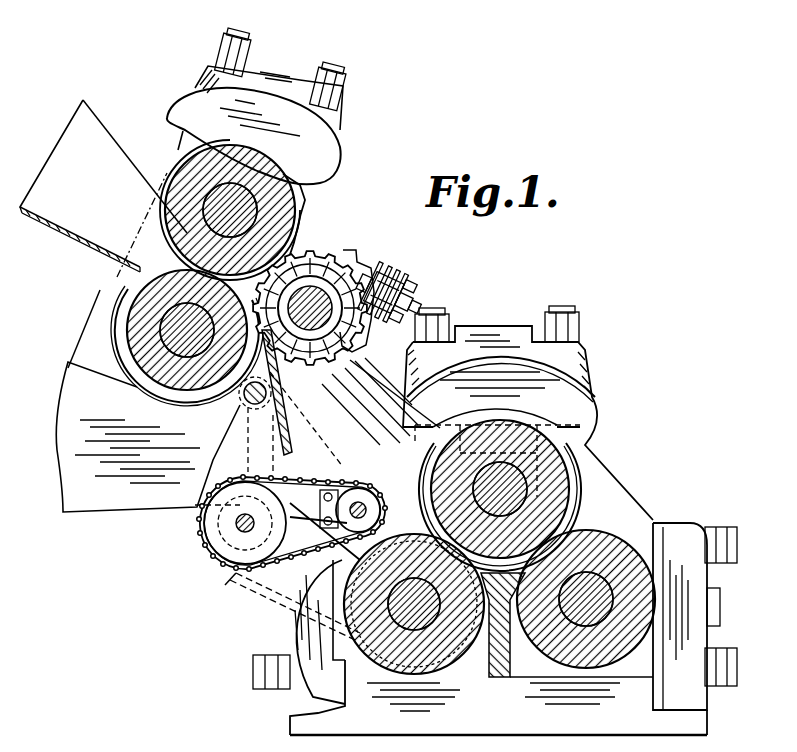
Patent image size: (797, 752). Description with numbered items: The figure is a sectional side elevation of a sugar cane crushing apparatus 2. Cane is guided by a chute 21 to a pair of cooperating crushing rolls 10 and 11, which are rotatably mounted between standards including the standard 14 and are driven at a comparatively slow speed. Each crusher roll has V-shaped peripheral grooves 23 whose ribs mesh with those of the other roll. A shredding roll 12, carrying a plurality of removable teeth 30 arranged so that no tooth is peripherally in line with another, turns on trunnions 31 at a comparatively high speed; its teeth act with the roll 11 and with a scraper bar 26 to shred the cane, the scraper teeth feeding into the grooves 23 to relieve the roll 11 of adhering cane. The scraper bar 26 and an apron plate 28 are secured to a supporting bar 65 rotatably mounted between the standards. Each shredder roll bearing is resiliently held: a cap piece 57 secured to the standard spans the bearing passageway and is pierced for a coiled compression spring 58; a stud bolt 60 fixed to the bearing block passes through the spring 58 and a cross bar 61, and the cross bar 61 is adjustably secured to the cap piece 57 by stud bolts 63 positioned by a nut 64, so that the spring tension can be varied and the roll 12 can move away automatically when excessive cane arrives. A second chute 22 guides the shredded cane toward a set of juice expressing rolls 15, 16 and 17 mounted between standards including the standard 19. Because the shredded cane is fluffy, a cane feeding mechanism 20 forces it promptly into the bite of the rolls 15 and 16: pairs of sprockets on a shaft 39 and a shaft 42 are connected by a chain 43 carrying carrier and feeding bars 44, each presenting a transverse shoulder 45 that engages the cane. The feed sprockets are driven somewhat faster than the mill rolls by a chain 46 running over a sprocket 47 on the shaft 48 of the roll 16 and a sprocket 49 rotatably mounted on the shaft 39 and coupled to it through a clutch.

The feed mechanism 2 is at (438, 284).
The crushing roll 10 is at (187, 182).
The crushing roll 11 is at (157, 316).
The shredding roll 12 is at (347, 262).
The standard 14 is at (300, 196).
The juice expressing roll 15 is at (547, 423).
The juice expressing roll 16 is at (393, 650).
The juice expressing roll 17 is at (610, 557).
The standard 19 is at (590, 483).
The cane feeding mechanism 20 is at (308, 473).
The chute 21 is at (92, 128).
The chute 22 is at (377, 385).
The peripheral groove 23 is at (151, 387).
The scraper bar 26 is at (278, 376).
The apron plate 28 is at (289, 428).
The tooth 30 is at (362, 272).
The trunnion 31 is at (310, 293).
The shaft 39 is at (202, 527).
The shaft 42 is at (360, 502).
The chain 43 is at (214, 562).
The carrier and feeding bar 44 is at (199, 550).
The shoulder 45 is at (378, 488).
The chain 46 is at (267, 588).
The sprocket 47 is at (427, 683).
The shaft 48 is at (451, 667).
The sprocket 49 is at (227, 588).
The cap piece 57 is at (349, 264).
The coiled compression spring 58 is at (384, 320).
The stud bolt 60 is at (422, 284).
The cross bar 61 is at (413, 277).
The stud bolt 63 is at (402, 264).
The nut 64 is at (428, 301).
The supporting bar 65 is at (246, 455).